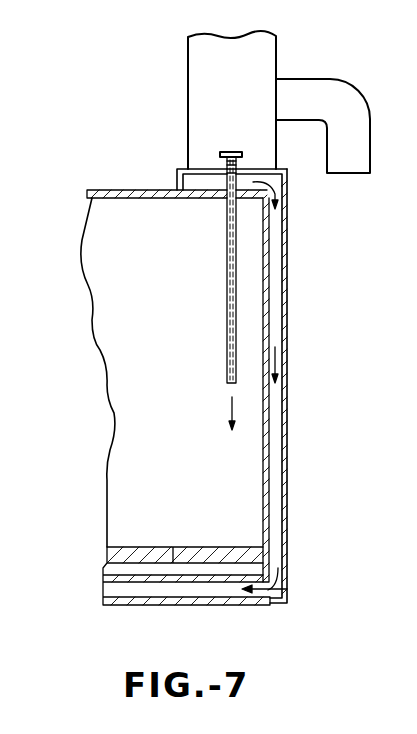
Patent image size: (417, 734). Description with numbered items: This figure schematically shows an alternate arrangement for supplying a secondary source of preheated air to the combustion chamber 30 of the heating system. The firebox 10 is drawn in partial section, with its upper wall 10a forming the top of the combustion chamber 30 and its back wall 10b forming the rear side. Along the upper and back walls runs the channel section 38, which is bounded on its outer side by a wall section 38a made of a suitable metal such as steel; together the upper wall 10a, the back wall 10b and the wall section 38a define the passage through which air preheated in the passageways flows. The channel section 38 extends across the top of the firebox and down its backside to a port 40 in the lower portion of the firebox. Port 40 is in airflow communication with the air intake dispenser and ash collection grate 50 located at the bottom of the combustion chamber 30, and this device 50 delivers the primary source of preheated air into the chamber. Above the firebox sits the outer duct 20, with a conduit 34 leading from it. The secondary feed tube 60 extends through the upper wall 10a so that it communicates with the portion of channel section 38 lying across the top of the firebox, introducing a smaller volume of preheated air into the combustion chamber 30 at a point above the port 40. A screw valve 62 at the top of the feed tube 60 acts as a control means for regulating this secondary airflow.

The firebox 10 is at (87, 172).
The upper wall of firebox 10a is at (152, 190).
The back wall of firebox 10b is at (265, 433).
The outer duct 20 is at (267, 57).
The combustion chamber 30 is at (134, 249).
The pipe 34 is at (355, 102).
The channel section 38 is at (287, 357).
The wall section 38a is at (288, 250).
The port 40 is at (287, 589).
The air intake dispenser and ash collection grate 50 is at (157, 547).
The secondary feed tube 60 is at (227, 290).
The screw valve 62 is at (235, 150).